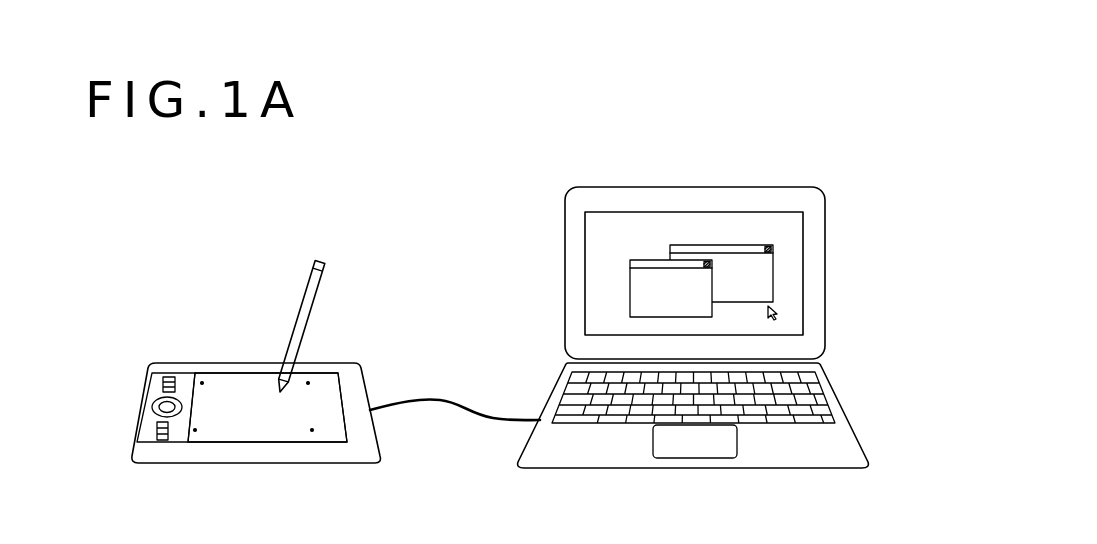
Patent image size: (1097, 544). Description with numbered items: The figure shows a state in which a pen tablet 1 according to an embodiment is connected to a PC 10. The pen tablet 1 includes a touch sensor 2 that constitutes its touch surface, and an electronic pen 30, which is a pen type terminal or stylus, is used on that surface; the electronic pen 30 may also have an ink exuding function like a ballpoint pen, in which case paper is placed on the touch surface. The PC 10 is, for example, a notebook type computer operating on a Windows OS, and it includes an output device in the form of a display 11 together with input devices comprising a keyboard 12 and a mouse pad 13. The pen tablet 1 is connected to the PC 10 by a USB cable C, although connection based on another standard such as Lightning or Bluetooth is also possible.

The pen tablet 1 is at (173, 373).
The touch sensor 2 is at (223, 377).
The electronic pen 30 is at (320, 262).
The USB cable C is at (450, 400).
The PC 10 is at (718, 197).
The display 11 is at (792, 277).
The keyboard 12 is at (840, 420).
The mouse pad 13 is at (695, 450).